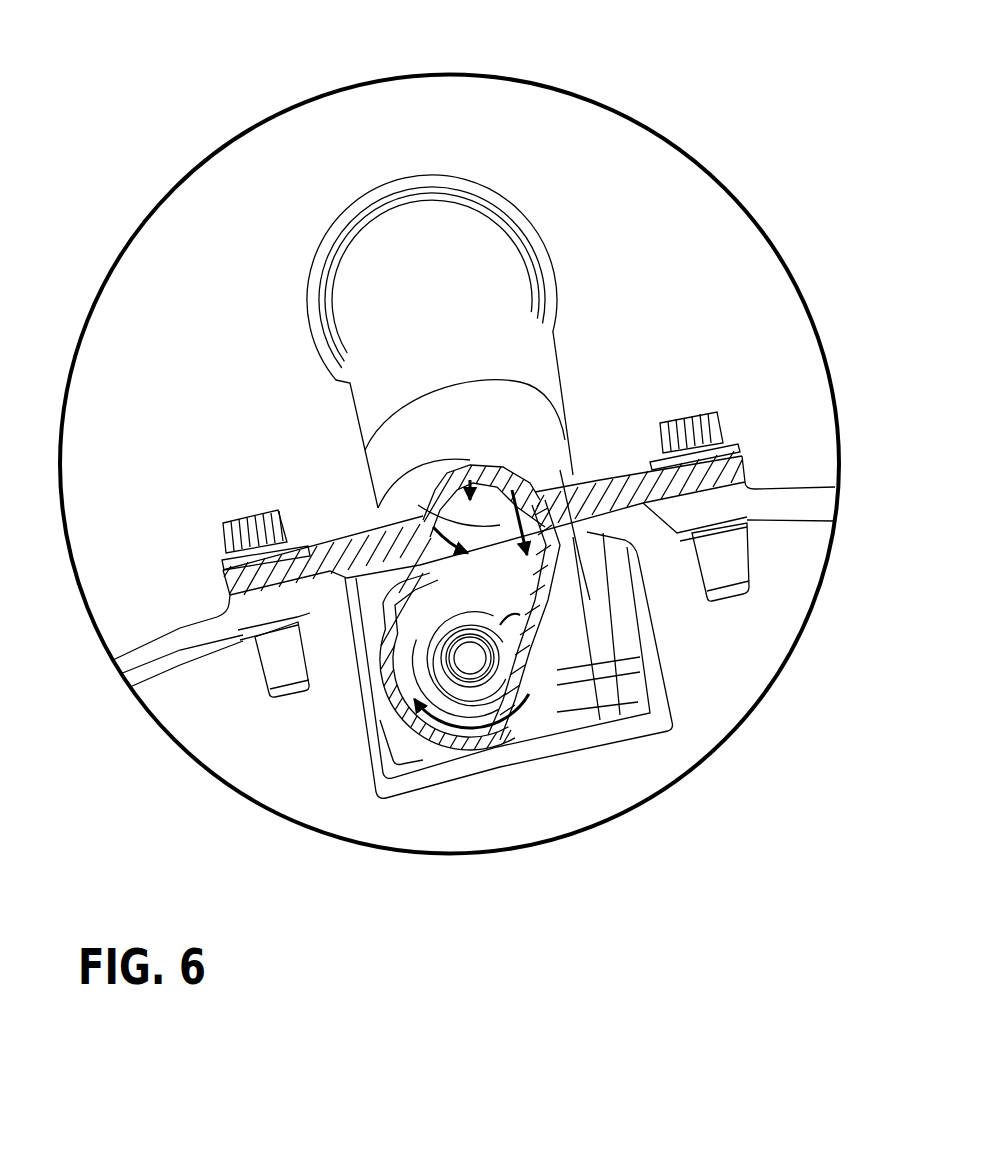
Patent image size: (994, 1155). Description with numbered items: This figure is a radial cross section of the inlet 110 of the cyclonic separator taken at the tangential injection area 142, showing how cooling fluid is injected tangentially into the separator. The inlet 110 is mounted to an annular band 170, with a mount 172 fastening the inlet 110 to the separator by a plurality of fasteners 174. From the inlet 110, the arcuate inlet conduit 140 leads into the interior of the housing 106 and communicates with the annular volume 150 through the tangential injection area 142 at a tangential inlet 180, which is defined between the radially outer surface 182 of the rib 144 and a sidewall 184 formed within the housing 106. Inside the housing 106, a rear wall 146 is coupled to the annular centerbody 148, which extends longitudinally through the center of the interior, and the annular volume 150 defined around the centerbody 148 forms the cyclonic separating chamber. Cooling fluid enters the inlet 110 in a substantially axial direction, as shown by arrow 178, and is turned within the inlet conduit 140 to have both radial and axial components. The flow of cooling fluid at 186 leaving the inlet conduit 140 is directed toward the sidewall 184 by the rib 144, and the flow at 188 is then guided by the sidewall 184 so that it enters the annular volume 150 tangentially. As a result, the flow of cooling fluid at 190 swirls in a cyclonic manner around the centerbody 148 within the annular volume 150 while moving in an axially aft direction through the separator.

The housing 106 is at (517, 742).
The inlet 110 is at (415, 174).
The inlet conduit 140 is at (463, 238).
The tangential injection area 142 is at (472, 485).
The rib 144 is at (463, 580).
The rear wall 146 is at (520, 605).
The annular centerbody 148 is at (470, 665).
The annular volume 150 is at (505, 710).
The annular band 170 is at (157, 638).
The mount 172 is at (330, 540).
The fasteners 174 is at (245, 516).
The arrow 178 is at (435, 323).
The tangential inlet 180 is at (523, 613).
The radially outer surface 182 is at (447, 572).
The sidewall 184 is at (548, 603).
The flow of cooling fluid 186 is at (417, 503).
The flow of cooling fluid 188 is at (508, 478).
The flow of cooling fluid 190 is at (455, 745).